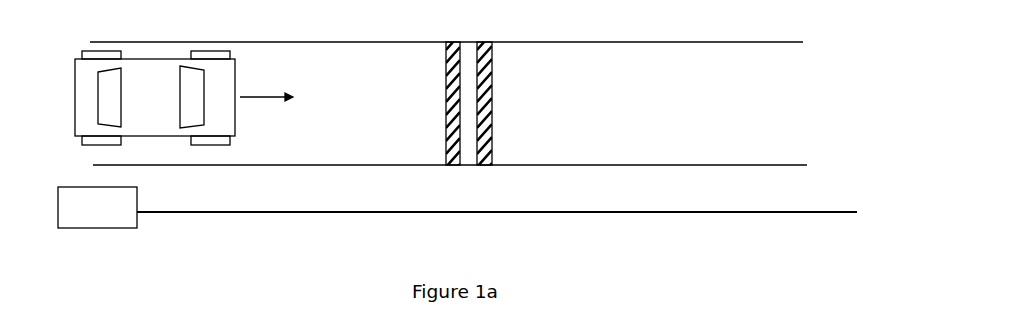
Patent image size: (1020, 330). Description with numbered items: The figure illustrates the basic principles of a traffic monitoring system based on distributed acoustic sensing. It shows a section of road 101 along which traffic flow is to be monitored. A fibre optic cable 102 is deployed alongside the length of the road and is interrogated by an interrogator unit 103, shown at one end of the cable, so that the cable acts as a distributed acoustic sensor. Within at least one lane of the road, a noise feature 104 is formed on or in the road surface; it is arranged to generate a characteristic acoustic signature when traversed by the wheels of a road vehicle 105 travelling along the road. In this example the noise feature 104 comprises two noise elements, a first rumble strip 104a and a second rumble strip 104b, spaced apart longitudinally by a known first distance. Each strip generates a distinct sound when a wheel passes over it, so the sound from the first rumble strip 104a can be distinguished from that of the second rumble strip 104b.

The section of road 101 is at (693, 42).
The fibre optic cable 102 is at (450, 218).
The interrogator unit 103 is at (107, 216).
The noise feature 104 is at (472, 90).
The first noise element 104a is at (447, 37).
The second noise element 104b is at (485, 37).
The road vehicle 105 is at (160, 77).